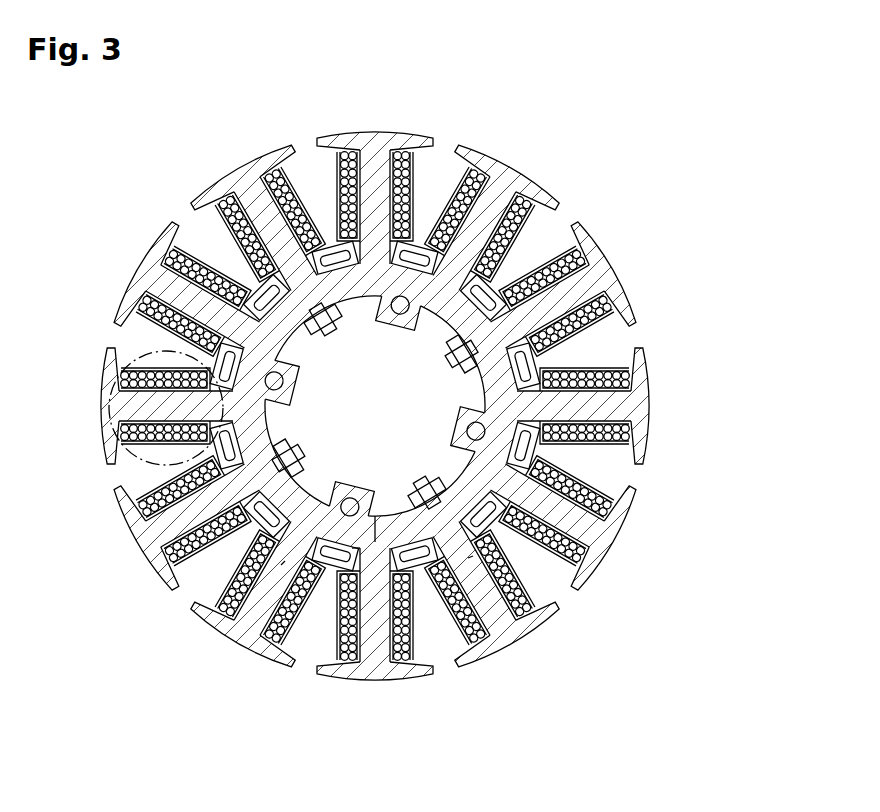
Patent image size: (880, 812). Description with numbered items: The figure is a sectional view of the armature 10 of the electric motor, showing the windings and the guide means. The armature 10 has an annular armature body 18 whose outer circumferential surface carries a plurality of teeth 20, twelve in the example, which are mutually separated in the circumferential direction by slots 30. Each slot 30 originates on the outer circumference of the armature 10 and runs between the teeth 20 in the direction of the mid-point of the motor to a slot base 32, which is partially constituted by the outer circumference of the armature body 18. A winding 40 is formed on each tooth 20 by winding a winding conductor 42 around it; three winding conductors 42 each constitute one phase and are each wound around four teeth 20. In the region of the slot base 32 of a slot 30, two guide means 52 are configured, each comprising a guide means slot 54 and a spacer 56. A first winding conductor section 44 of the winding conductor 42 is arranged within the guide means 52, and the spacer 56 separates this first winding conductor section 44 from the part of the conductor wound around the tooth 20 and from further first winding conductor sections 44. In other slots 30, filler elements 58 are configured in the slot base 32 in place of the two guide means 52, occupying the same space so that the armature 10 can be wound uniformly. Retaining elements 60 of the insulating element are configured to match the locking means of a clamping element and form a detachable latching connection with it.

The armature 10 is at (588, 106).
The armature body 18 is at (600, 545).
The tooth 20 is at (605, 300).
The slot 30 is at (558, 242).
The slot base 32 is at (470, 562).
The winding 40 is at (100, 396).
The winding conductor 42 is at (280, 565).
The first winding conductor section 44 is at (327, 332).
The guide means 52 is at (292, 304).
The guide means slot 54 is at (372, 500).
The spacer 56 is at (357, 553).
The filler element 58 is at (425, 240).
The retaining element 60 is at (455, 356).